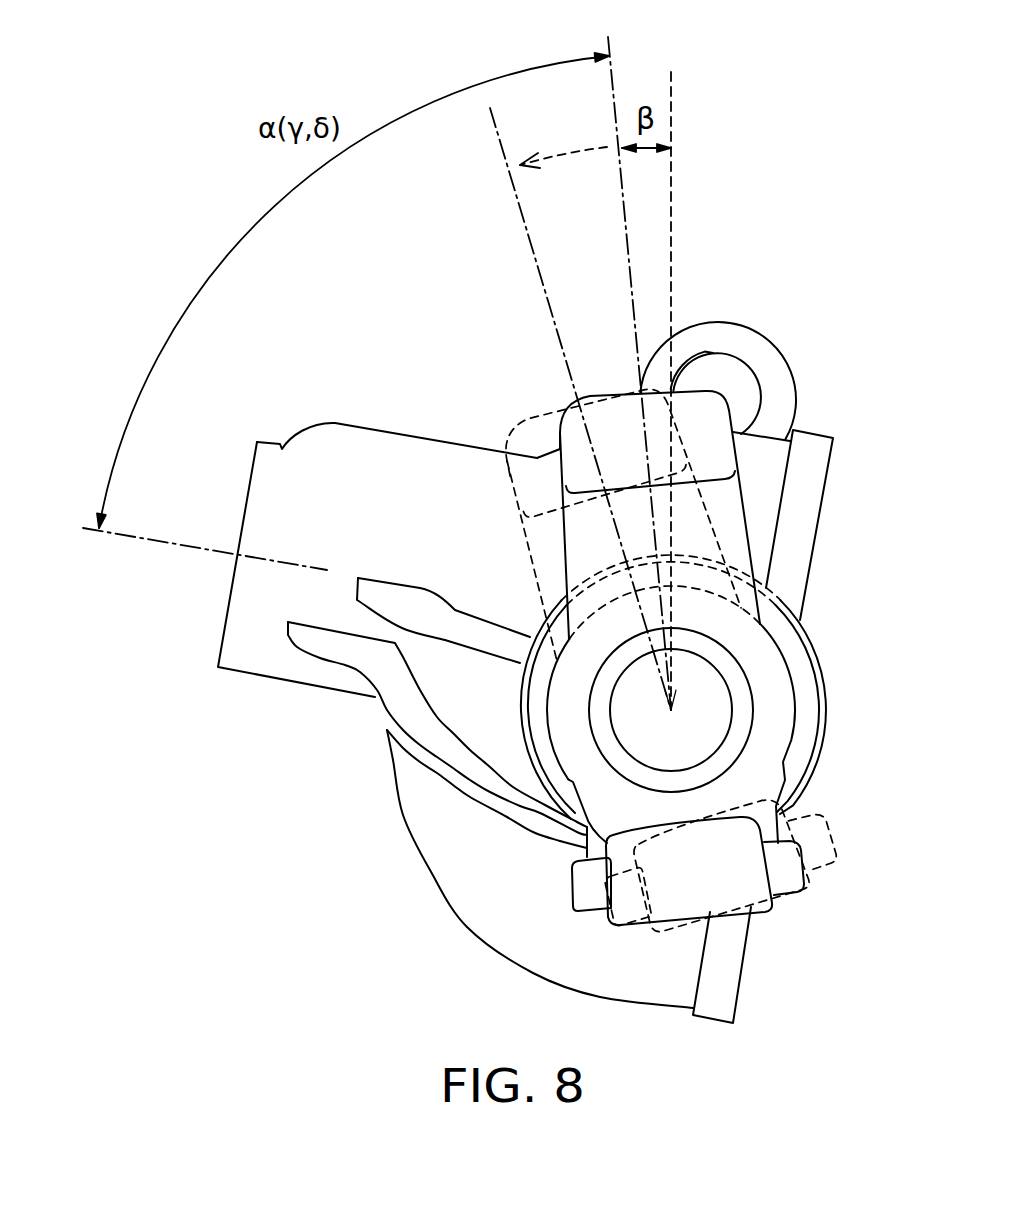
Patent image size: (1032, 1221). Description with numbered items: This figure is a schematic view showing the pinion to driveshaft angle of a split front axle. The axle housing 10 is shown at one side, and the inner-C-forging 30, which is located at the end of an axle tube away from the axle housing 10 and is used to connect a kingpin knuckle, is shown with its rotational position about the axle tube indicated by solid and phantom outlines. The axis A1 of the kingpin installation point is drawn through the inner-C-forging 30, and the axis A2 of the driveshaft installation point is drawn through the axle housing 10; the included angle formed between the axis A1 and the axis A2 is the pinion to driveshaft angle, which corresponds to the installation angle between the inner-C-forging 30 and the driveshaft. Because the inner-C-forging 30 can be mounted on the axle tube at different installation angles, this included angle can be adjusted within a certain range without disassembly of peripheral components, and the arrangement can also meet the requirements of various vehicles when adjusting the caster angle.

The axle housing 10 is at (257, 603).
The inner-C-forging 30 is at (725, 510).
The axis of kingpin installation point A1 is at (626, 355).
The axis of driveshaft installation point A2 is at (183, 536).